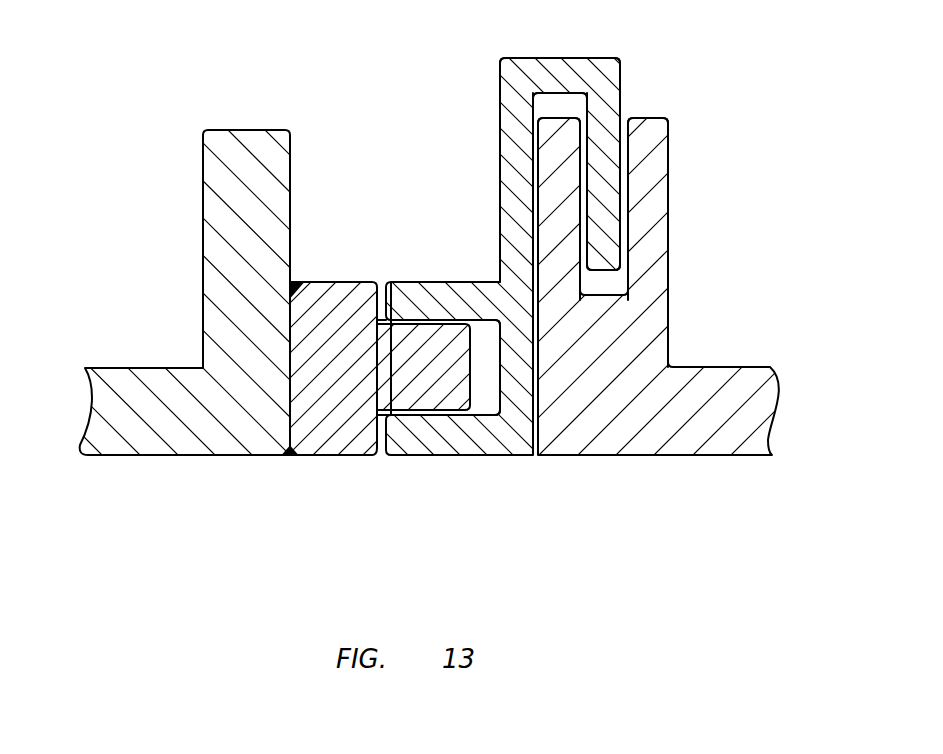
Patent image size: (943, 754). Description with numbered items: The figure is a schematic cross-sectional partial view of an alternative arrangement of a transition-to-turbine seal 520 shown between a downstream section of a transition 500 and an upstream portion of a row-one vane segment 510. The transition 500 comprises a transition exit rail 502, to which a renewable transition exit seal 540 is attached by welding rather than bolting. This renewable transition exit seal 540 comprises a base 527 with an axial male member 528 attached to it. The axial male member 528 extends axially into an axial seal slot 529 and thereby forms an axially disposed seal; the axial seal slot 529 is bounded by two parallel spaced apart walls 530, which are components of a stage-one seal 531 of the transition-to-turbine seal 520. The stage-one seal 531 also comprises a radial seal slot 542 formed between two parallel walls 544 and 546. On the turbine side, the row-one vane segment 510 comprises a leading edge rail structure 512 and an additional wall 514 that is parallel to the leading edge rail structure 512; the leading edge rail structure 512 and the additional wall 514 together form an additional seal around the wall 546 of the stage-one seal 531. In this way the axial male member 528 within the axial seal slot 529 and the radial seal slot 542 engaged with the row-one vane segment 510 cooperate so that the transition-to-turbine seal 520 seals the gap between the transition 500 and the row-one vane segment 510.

The transition 500 is at (140, 368).
The transition exit rail 502 is at (203, 197).
The row 1 vane segment 510 is at (705, 457).
The leading edge rail structure 512 is at (557, 230).
The additional wall 514 is at (668, 298).
The transition-to-turbine seal 520 is at (505, 528).
The base 527 is at (323, 313).
The axial male member 528 is at (415, 378).
The axial seal slot 529 is at (485, 390).
The parallel spaced apart walls 530 is at (443, 281).
The stage-1 seal 531 is at (500, 97).
The renewable transition exit seal 540 is at (323, 457).
The radial seal slot 542 is at (557, 105).
The parallel wall 544 is at (518, 162).
The parallel wall 546 is at (608, 188).